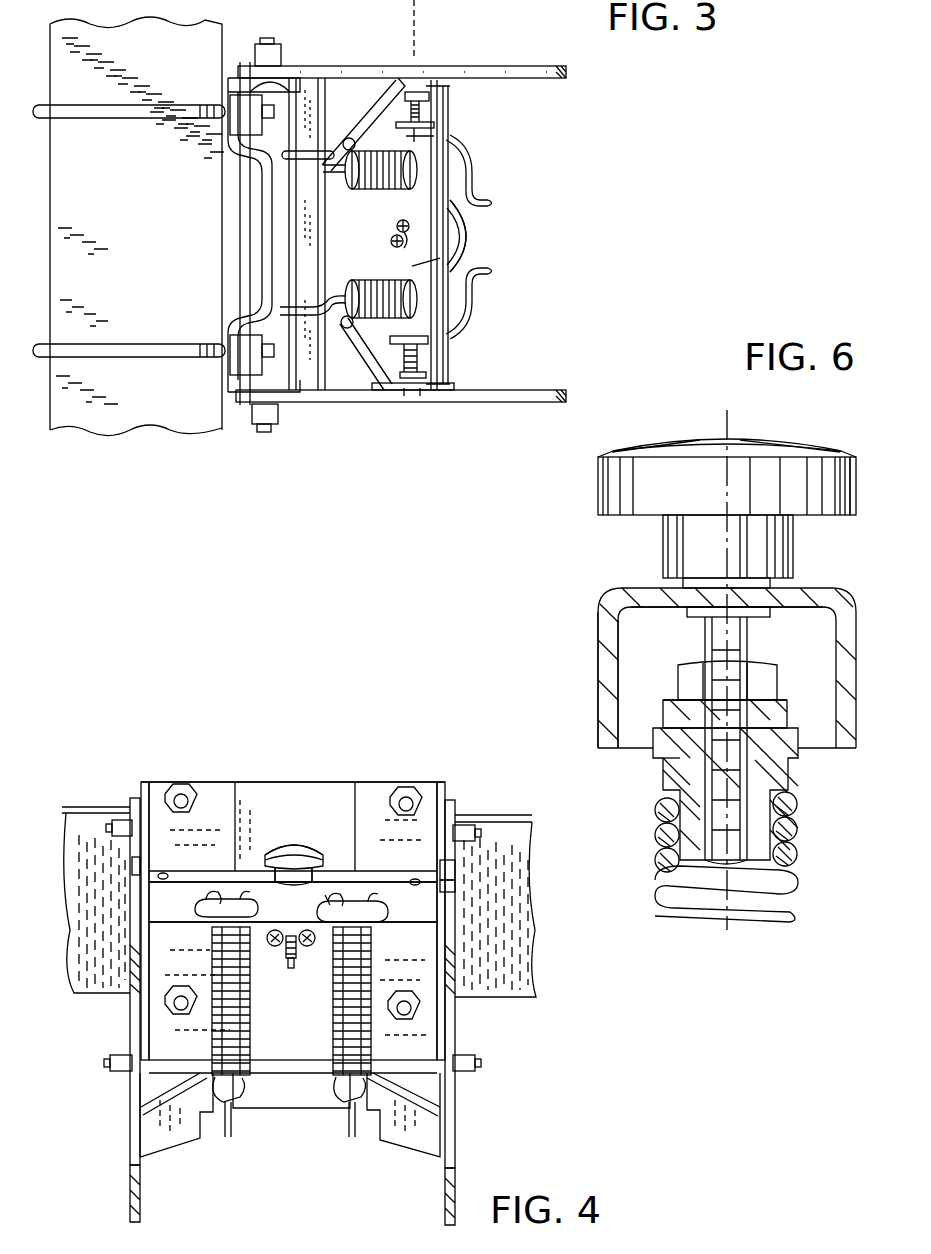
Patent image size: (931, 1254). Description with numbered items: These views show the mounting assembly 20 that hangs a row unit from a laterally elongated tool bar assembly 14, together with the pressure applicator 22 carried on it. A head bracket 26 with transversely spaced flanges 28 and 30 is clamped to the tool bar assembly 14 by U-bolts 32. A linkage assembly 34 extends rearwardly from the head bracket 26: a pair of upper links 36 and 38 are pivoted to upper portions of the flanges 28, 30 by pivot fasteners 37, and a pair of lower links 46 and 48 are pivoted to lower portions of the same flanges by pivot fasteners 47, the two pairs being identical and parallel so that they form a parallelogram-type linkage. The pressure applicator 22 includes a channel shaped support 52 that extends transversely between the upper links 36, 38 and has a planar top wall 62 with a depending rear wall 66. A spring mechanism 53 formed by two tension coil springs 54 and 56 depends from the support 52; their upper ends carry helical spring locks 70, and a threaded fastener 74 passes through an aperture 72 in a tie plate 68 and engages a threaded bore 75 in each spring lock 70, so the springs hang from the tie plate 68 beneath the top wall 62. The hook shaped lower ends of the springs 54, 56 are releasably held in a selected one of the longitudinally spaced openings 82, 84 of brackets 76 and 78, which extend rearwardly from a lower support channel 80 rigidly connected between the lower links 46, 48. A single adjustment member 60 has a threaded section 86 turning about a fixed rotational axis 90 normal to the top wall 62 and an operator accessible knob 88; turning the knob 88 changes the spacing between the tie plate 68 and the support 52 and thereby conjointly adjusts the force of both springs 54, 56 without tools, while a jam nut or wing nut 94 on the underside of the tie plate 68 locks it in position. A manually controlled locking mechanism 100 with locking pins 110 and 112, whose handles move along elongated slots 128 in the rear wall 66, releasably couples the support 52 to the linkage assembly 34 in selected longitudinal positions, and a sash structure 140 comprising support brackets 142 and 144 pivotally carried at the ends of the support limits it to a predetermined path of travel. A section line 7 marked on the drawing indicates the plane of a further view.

In FIG. 3, the section line 7 is at (416, 15).
In FIG. 3, the tool bar assembly 14 is at (123, 216).
In FIG. 4, the tool bar assembly 14 is at (483, 814).
In FIG. 3, the mounting assembly 20 is at (496, 66).
In FIG. 3, the pressure applicator 22 is at (474, 224).
In FIG. 6, the pressure applicator 22 is at (755, 430).
In FIG. 4, the pressure applicator 22 is at (279, 842).
In FIG. 3, the head bracket 26 is at (252, 261).
In FIG. 4, the head bracket 26 is at (255, 782).
In FIG. 3, the flange 28 is at (278, 398).
In FIG. 4, the flange 28 is at (441, 795).
In FIG. 3, the flange 30 is at (248, 62).
In FIG. 4, the flange 30 is at (145, 782).
In FIG. 3, the U-bolt 32 is at (100, 106).
In FIG. 4, the U-bolt 32 is at (183, 797).
In FIG. 3, the linkage assembly 34 is at (348, 66).
In FIG. 4, the linkage assembly 34 is at (455, 923).
In FIG. 4, the upper link 36 is at (456, 972).
In FIG. 4, the pivot fastener 37 is at (112, 830).
In FIG. 4, the upper link 38 is at (130, 972).
In FIG. 3, the lower link 46 is at (523, 403).
In FIG. 4, the lower link 46 is at (456, 1158).
In FIG. 3, the pivot fastener 47 is at (268, 40).
In FIG. 4, the pivot fastener 47 is at (108, 1063).
In FIG. 3, the lower link 48 is at (545, 80).
In FIG. 4, the lower link 48 is at (142, 1168).
In FIG. 3, the support 52 is at (456, 358).
In FIG. 6, the support 52 is at (598, 622).
In FIG. 4, the support 52 is at (330, 860).
In FIG. 3, the spring mechanism 53 is at (395, 385).
In FIG. 4, the spring mechanism 53 is at (325, 1048).
In FIG. 3, the tension coil spring 54 is at (368, 360).
In FIG. 4, the tension coil spring 54 is at (356, 1026).
In FIG. 3, the tension coil spring 56 is at (375, 190).
In FIG. 6, the tension coil spring 56 is at (786, 878).
In FIG. 4, the tension coil spring 56 is at (212, 1048).
In FIG. 6, the adjustment member 60 is at (598, 509).
In FIG. 4, the adjustment member 60 is at (264, 842).
In FIG. 6, the top wall 62 is at (655, 604).
In FIG. 6, the rear wall 66 is at (598, 700).
In FIG. 3, the tie plate 68 is at (412, 268).
In FIG. 6, the tie plate 68 is at (790, 705).
In FIG. 6, the helical spring lock 70 is at (786, 777).
In FIG. 6, the aperture 72 is at (668, 715).
In FIG. 6, the threaded fastener 74 is at (680, 675).
In FIG. 6, the threaded bore 75 is at (703, 777).
In FIG. 3, the bracket 76 is at (335, 370).
In FIG. 4, the bracket 76 is at (383, 1135).
In FIG. 3, the bracket 78 is at (412, 92).
In FIG. 4, the bracket 78 is at (210, 1135).
In FIG. 3, the lower support channel 80 is at (302, 205).
In FIG. 4, the lower support channel 80 is at (268, 1108).
In FIG. 3, the opening 82 is at (318, 170).
In FIG. 3, the opening 84 is at (290, 332).
In FIG. 6, the threaded section 86 is at (730, 640).
In FIG. 4, the threaded section 86 is at (293, 968).
In FIG. 3, the knob 88 is at (468, 238).
In FIG. 6, the knob 88 is at (832, 505).
In FIG. 6, the rotational axis 90 is at (722, 423).
In FIG. 3, the jam nut 94 is at (398, 247).
In FIG. 4, the jam nut 94 is at (278, 948).
In FIG. 3, the locking mechanism 100 is at (480, 200).
In FIG. 4, the locking mechanism 100 is at (302, 946).
In FIG. 3, the locking pin 110 is at (477, 165).
In FIG. 4, the locking pin 110 is at (371, 905).
In FIG. 3, the locking pin 112 is at (460, 318).
In FIG. 4, the locking pin 112 is at (215, 897).
In FIG. 4, the slot 128 is at (336, 900).
In FIG. 4, the sash structure 140 is at (455, 868).
In FIG. 4, the support bracket 142 is at (458, 886).
In FIG. 4, the support bracket 144 is at (132, 870).